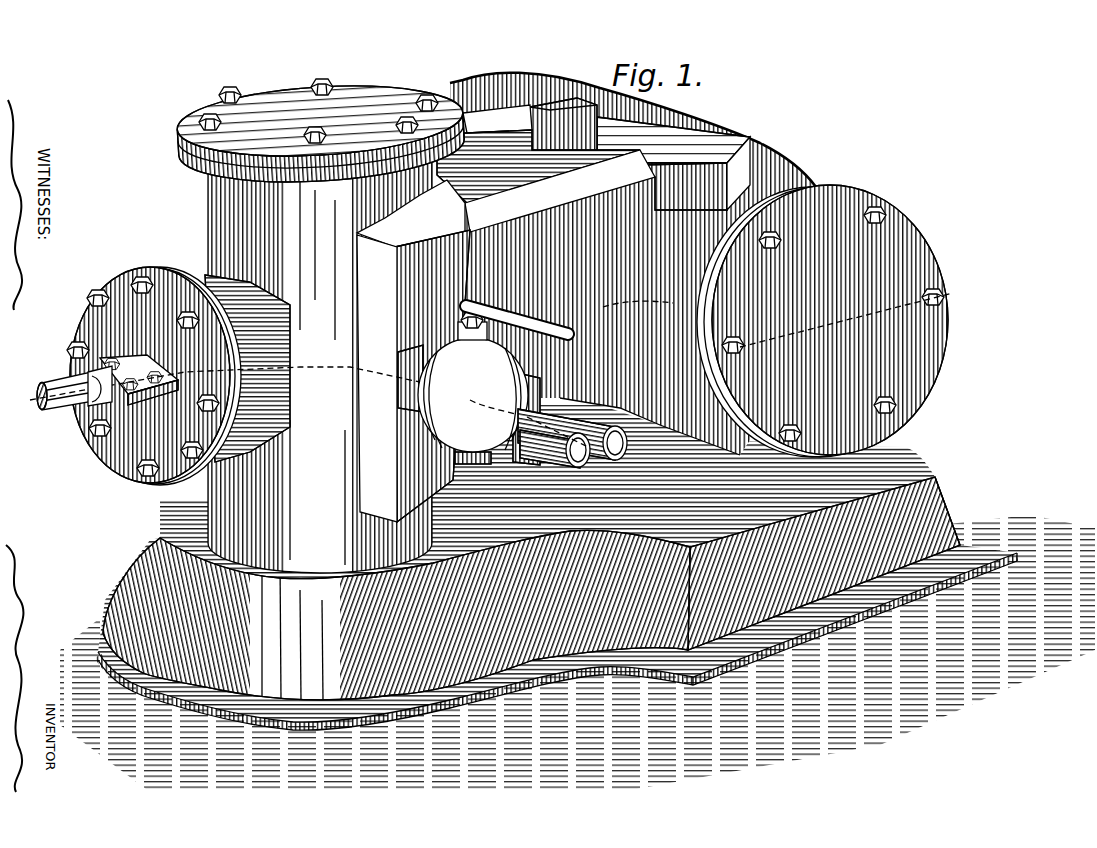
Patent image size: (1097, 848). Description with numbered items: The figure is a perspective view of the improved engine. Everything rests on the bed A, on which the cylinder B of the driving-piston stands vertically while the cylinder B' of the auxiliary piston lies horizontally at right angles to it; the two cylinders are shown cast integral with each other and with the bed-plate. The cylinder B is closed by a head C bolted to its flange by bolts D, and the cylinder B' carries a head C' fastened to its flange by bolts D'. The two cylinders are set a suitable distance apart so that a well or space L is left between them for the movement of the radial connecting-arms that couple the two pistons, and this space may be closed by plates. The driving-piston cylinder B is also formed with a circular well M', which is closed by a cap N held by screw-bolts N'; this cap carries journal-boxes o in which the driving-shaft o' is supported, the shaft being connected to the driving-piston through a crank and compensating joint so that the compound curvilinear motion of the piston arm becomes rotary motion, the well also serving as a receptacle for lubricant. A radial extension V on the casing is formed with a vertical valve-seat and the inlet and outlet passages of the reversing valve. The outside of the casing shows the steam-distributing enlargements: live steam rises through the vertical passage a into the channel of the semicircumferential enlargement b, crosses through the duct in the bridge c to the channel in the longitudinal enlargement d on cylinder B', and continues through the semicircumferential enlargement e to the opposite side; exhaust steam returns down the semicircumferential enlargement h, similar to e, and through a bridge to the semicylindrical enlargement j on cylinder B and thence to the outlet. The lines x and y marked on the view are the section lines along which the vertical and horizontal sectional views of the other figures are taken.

The bed A is at (157, 670).
The driving-piston cylinder B is at (320, 362).
The auxiliary piston cylinder B' is at (693, 265).
The cylinder head C is at (320, 122).
The cylinder head C' is at (839, 320).
The bolts D is at (318, 95).
The bolts D' is at (833, 296).
The cap N is at (155, 361).
The screw-bolts N' is at (143, 377).
The circular well M' is at (247, 368).
The journal-boxes o is at (139, 375).
The driving-shaft o' is at (79, 405).
The section line y y is at (40, 399).
The radial extension V is at (483, 385).
The semicylindrical enlargement j is at (467, 480).
The vertical passage a is at (413, 376).
The semicircumferential enlargement b is at (411, 213).
The well L is at (515, 186).
The bridge c is at (597, 165).
The longitudinal enlargement d is at (697, 140).
The semicircumferential enlargement e is at (607, 131).
The section line x x is at (577, 100).
The semicircumferential enlargement h is at (783, 187).